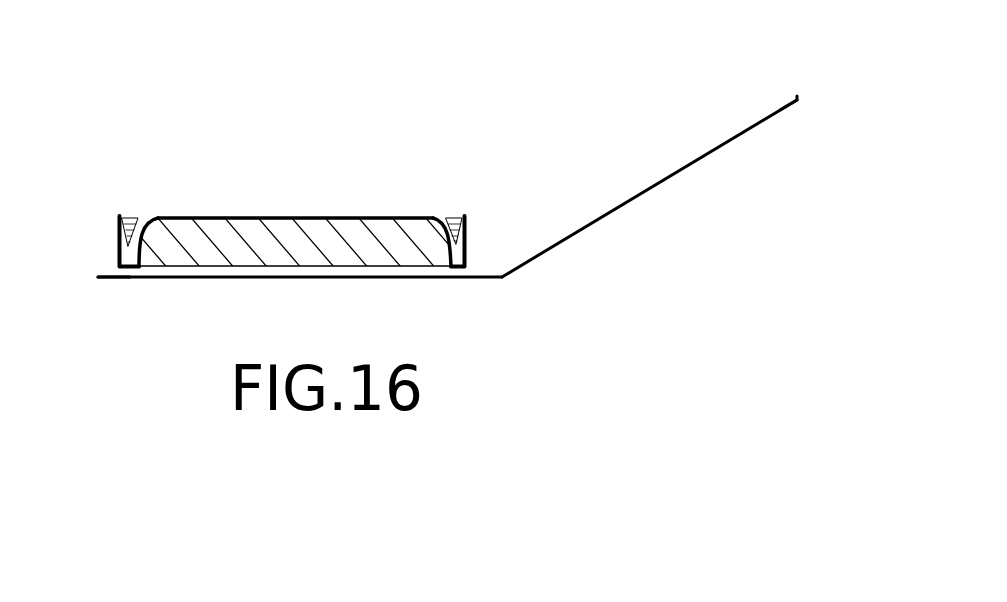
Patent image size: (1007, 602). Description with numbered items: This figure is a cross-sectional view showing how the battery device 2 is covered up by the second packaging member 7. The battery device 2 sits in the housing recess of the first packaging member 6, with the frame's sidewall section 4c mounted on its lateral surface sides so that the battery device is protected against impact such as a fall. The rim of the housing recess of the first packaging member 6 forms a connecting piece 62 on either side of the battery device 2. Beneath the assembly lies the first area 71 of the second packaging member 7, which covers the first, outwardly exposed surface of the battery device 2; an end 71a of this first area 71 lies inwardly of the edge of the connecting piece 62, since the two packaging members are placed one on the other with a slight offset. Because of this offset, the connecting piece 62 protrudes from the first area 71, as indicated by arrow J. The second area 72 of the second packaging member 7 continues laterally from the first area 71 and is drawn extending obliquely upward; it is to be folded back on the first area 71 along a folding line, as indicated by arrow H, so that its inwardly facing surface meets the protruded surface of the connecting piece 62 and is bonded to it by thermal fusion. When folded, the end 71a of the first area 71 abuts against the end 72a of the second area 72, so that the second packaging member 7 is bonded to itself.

The battery device 2 is at (307, 222).
The first packaging member 6 is at (232, 216).
The sidewall section 4c is at (132, 215).
The connecting piece 62 is at (117, 220).
The second packaging member 7 is at (457, 184).
The first area 71 is at (278, 309).
The end of first area 71a is at (98, 279).
The second area 72 is at (658, 152).
The end of second area 72a is at (790, 122).
The arrow J is at (112, 242).
The arrow H is at (705, 128).